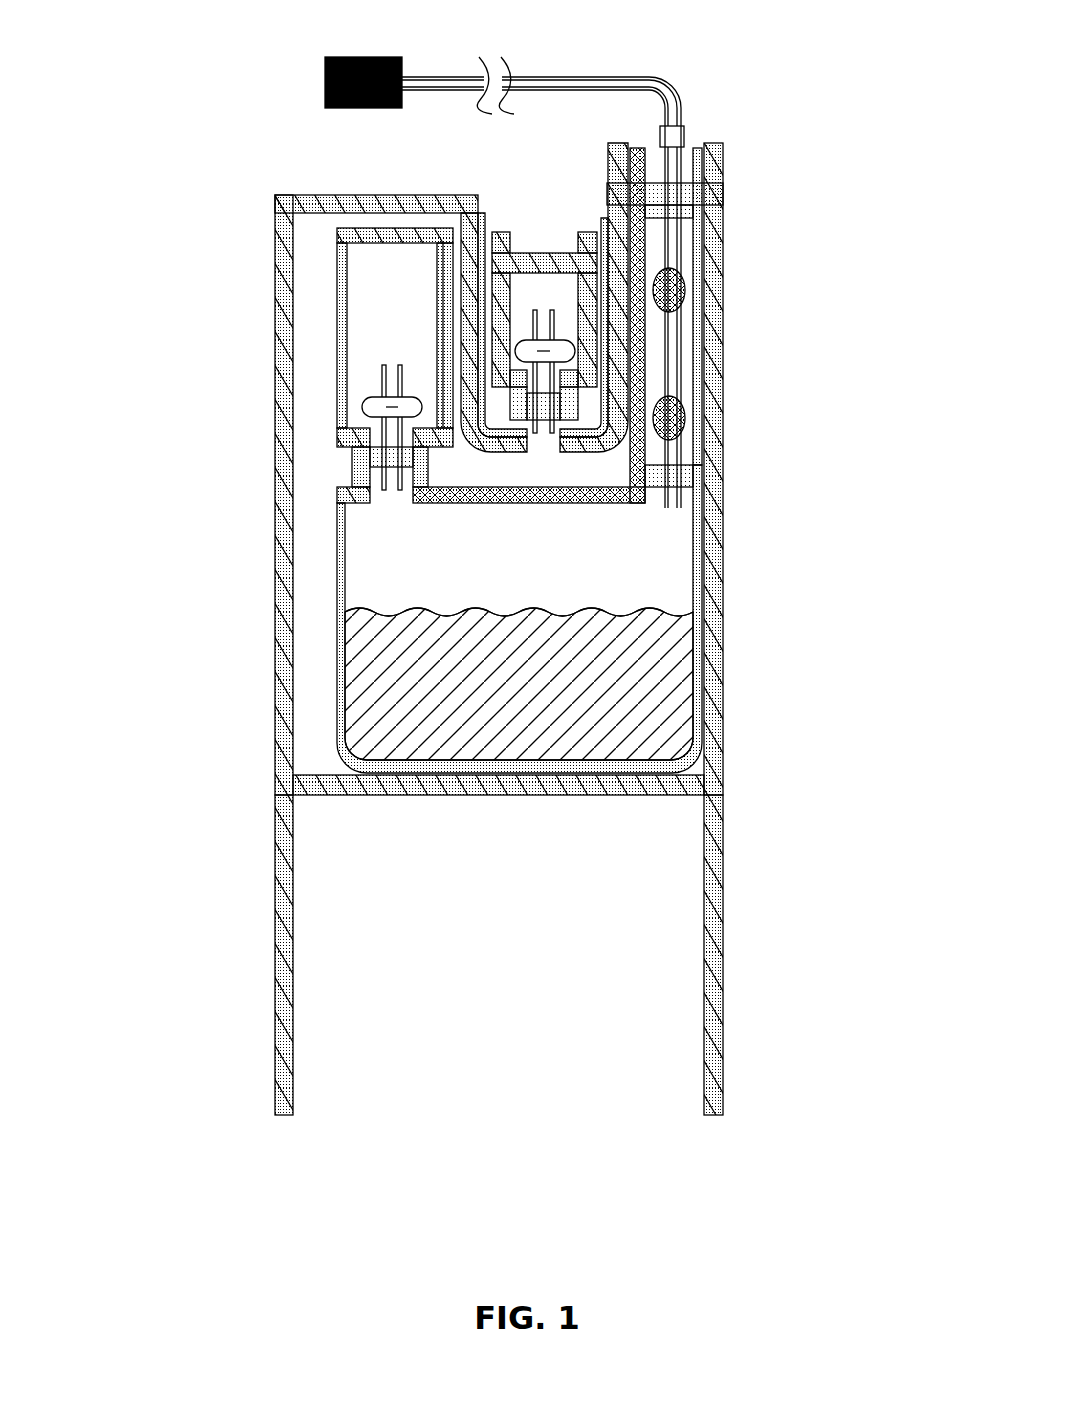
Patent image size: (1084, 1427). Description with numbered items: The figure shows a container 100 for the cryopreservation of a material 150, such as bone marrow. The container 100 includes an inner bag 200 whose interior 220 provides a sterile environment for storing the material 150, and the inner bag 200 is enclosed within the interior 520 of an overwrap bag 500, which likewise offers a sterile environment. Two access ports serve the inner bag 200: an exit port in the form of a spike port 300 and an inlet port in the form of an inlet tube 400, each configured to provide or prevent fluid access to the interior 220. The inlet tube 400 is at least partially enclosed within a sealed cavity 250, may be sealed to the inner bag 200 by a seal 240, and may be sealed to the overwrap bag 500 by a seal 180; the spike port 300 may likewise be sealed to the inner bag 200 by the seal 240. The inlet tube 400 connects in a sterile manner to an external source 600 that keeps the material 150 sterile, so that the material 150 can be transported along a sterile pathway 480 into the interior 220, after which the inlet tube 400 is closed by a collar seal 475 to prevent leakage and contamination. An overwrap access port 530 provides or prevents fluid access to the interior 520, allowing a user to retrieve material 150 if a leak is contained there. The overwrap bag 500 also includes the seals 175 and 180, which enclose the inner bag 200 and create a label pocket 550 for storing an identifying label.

The container 100 is at (716, 1259).
The material 150 is at (503, 714).
The seal 175 is at (590, 797).
The seal 180 is at (727, 190).
The inner bag 200 is at (338, 587).
The interior 220 is at (503, 575).
The seal 240 is at (353, 458).
The sealed cavity 250 is at (685, 243).
The spike port 300 is at (392, 362).
The inlet tube 400 is at (676, 357).
The collar seal 475 is at (686, 137).
The sterile pathway 480 is at (579, 78).
The overwrap bag 500 is at (275, 412).
The interior 520 is at (312, 341).
The overwrap access port 530 is at (543, 308).
The label pocket 550 is at (403, 1135).
The external source 600 is at (396, 57).